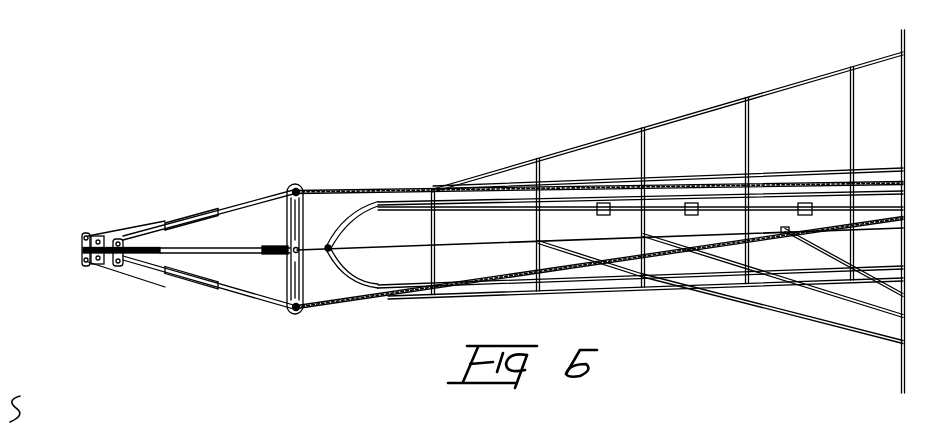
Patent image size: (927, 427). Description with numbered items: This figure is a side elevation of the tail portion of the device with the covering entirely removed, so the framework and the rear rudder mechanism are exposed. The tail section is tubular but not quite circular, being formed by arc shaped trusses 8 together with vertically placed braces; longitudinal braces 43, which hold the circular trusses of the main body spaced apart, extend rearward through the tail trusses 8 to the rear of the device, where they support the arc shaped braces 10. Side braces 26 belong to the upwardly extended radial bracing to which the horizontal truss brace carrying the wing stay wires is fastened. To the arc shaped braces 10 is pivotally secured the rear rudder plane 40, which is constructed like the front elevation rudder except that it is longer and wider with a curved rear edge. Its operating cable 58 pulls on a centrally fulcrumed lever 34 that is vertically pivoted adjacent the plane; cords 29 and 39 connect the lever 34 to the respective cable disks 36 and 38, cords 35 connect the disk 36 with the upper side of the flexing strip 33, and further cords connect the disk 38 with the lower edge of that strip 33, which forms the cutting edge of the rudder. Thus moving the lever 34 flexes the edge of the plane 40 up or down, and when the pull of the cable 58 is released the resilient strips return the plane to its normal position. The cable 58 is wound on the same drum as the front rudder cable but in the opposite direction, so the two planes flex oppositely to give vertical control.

The arc shaped truss 8 is at (434, 231).
The arc shaped brace 10 is at (352, 264).
The side brace 26 is at (750, 150).
The cord 29 is at (250, 205).
The flexing strip 33 is at (148, 273).
The centrally fulcrumed lever 34 is at (311, 249).
The cord 35 is at (153, 227).
The cable disk 36 is at (193, 215).
The cable disk 38 is at (192, 287).
The cord 39 is at (248, 297).
The rear rudder plane 40 is at (210, 248).
The longitudinal brace 43 is at (720, 207).
The operating cable 58 is at (355, 192).